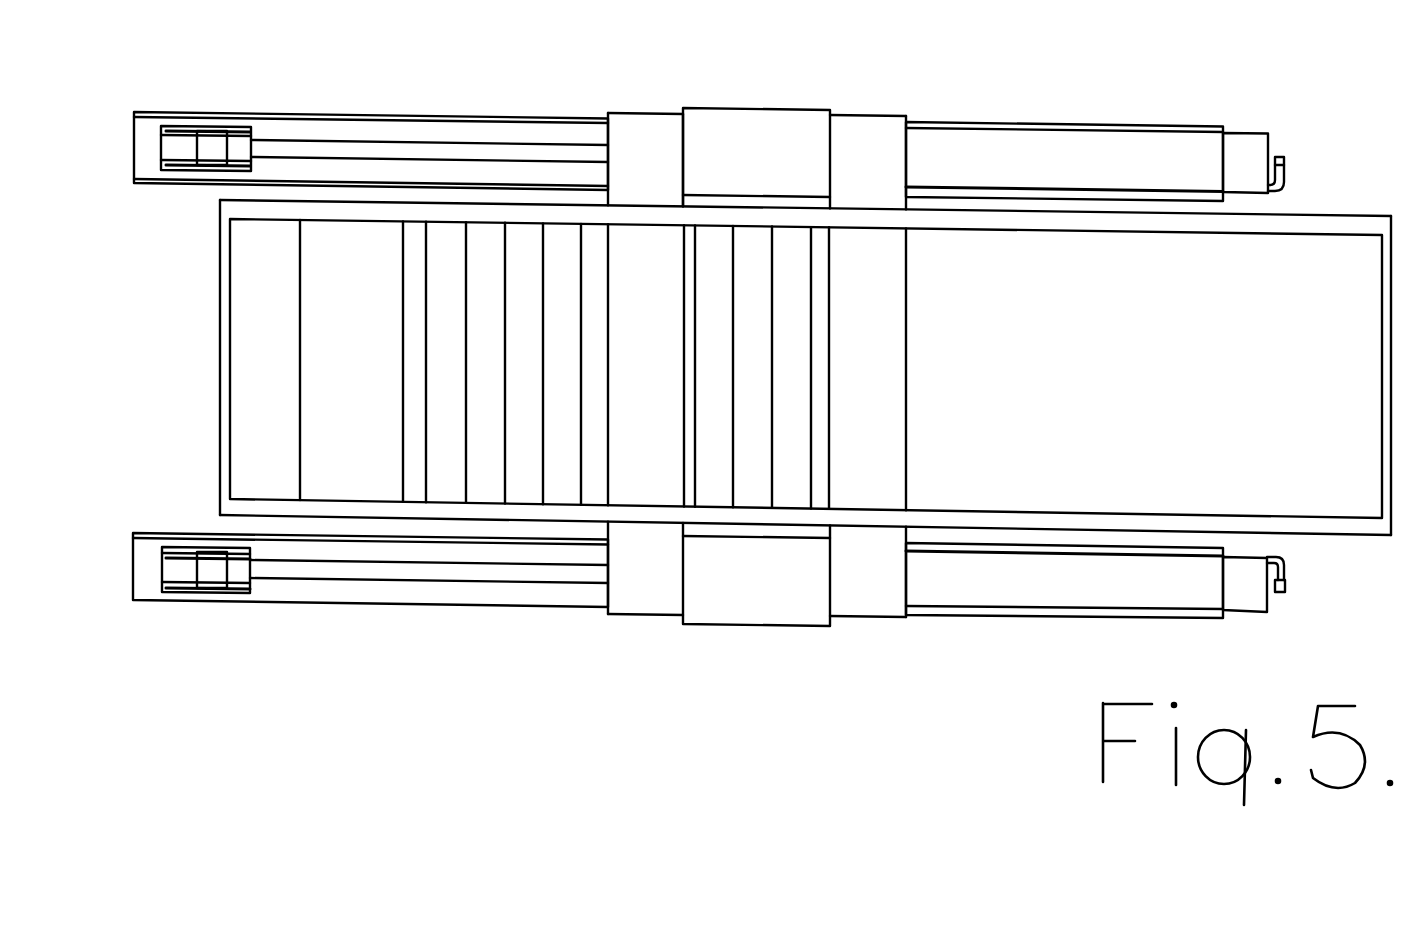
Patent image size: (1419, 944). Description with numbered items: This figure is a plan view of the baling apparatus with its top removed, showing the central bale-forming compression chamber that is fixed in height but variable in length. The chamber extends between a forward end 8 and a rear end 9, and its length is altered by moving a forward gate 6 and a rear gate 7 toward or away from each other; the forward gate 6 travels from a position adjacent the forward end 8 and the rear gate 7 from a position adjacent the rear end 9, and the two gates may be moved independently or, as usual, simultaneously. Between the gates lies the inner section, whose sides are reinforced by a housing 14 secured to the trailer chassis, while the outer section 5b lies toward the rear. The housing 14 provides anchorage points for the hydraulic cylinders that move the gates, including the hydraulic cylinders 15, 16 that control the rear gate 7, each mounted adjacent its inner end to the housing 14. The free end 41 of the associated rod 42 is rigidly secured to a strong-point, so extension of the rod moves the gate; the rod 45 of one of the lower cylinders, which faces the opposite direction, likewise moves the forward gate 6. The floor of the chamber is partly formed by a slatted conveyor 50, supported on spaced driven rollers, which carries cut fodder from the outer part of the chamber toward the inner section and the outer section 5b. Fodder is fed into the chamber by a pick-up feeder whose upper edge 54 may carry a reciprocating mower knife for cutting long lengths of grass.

The forward end 8 is at (210, 324).
The rear end 9 is at (1376, 318).
The outer section 5b is at (806, 368).
The forward gate 6 is at (645, 364).
The rear gate 7 is at (867, 366).
The housing 14 is at (756, 367).
The hydraulic cylinder 15 is at (1098, 595).
The hydraulic cylinder 16 is at (1149, 145).
The free end 41 is at (212, 588).
The rod 42 is at (298, 578).
The rod 45 is at (1010, 621).
The slatted conveyor 50 is at (562, 497).
The upper edge 54 is at (418, 497).